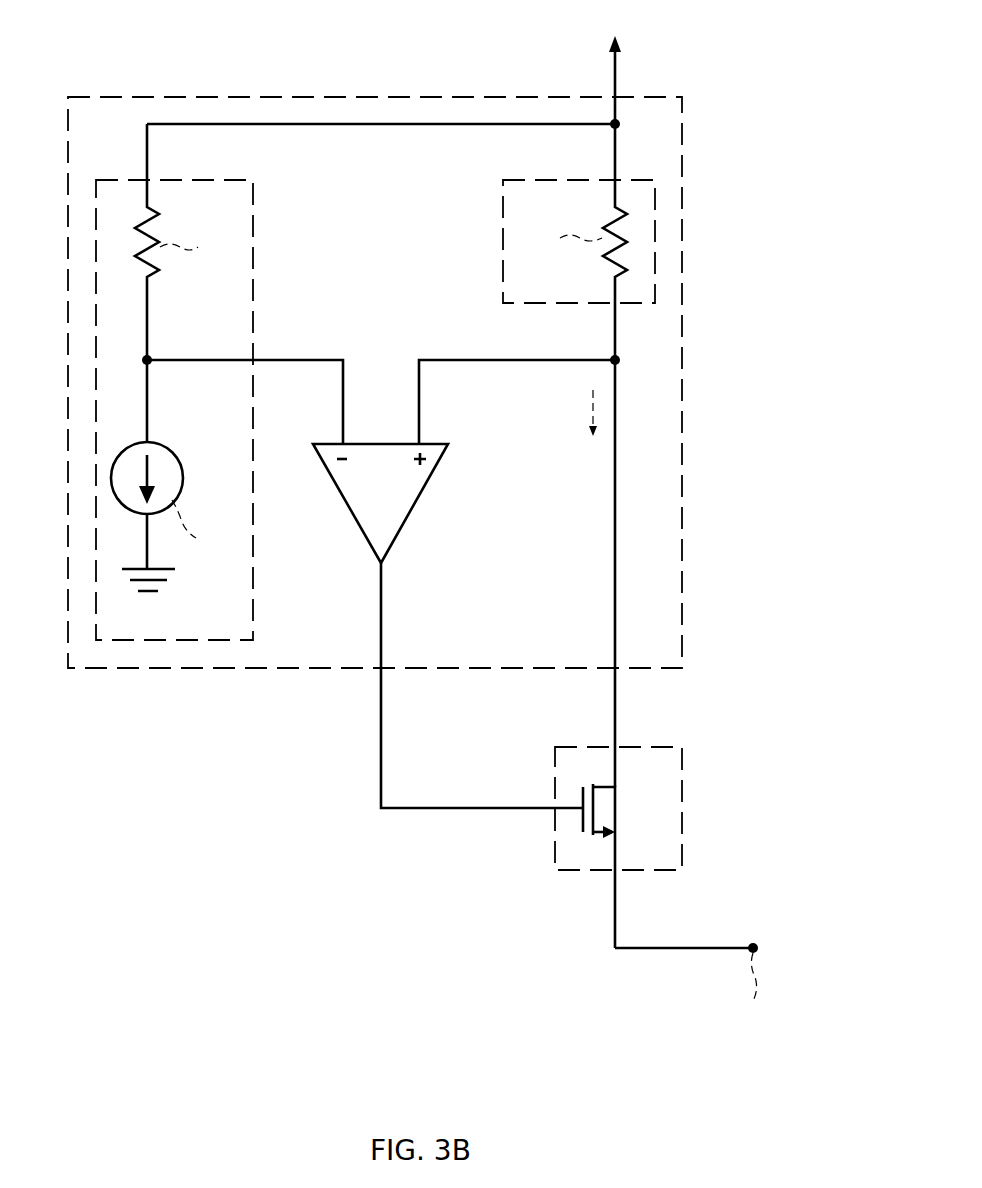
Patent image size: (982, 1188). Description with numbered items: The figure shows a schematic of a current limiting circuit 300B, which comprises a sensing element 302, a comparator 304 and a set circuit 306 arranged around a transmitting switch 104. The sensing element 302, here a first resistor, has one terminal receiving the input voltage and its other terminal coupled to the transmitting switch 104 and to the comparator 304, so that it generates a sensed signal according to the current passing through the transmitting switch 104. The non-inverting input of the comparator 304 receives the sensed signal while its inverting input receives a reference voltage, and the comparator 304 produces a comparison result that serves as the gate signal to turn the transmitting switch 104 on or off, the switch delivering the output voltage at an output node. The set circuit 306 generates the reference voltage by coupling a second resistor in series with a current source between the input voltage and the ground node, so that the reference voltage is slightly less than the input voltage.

The current limiting circuit 300B is at (682, 236).
The set circuit 306 is at (253, 236).
The sensing element 302 is at (502, 238).
The comparator 304 is at (402, 503).
The transmitting switch 104 is at (682, 808).